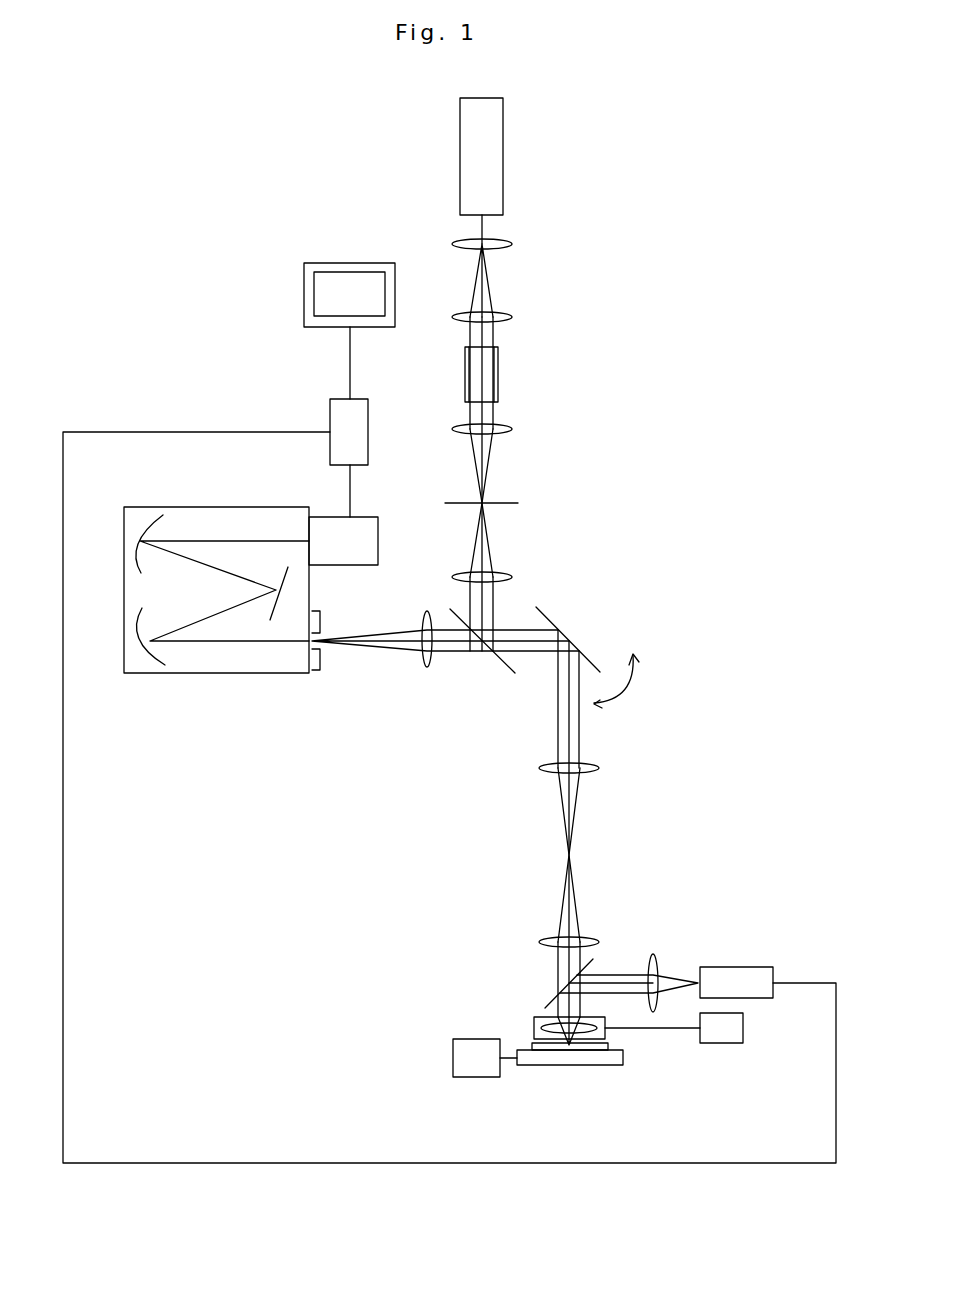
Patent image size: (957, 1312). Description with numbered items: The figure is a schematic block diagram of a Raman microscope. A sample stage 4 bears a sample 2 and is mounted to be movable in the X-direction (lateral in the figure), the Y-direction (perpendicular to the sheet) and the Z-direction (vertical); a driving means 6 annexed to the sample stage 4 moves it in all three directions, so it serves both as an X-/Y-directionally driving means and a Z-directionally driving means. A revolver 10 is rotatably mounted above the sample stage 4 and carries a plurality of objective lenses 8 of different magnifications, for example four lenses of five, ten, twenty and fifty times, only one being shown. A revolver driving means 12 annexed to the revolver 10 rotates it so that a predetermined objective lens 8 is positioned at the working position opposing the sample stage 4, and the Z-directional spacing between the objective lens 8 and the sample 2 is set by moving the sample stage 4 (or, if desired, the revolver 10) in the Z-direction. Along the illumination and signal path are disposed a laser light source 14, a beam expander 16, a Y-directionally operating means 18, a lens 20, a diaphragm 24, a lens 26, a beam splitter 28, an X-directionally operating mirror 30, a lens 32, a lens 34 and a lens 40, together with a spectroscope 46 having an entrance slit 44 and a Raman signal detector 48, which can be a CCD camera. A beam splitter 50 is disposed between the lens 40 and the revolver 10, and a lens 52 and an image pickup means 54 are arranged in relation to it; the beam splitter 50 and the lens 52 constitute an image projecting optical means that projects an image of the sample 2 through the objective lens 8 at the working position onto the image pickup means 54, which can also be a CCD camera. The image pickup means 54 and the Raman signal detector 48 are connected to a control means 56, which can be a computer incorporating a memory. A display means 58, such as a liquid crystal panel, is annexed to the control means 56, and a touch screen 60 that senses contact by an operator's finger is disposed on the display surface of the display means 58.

The sample 2 is at (530, 1046).
The sample stage 4 is at (623, 1058).
The driving means 6 is at (453, 1056).
The objective lens 8 is at (556, 1043).
The revolver 10 is at (537, 1016).
The revolver driving means 12 is at (743, 1028).
The laser light source 14 is at (503, 148).
The beam expander 16 is at (521, 236).
The Y-directionally operating means 18 is at (498, 365).
The lens 20 is at (462, 427).
The diaphragm 24 is at (450, 503).
The lens 26 is at (462, 575).
The beam splitter 28 is at (503, 678).
The X-directionally operating mirror 30 is at (548, 614).
The lens 32 is at (600, 768).
The lens 34 is at (600, 940).
The lens 40 is at (427, 668).
The entrance slit 44 is at (315, 675).
The spectroscope 46 is at (243, 675).
The Raman signal detector 48 is at (360, 565).
The beam splitter 50 is at (547, 1002).
The lens 52 is at (657, 968).
The image pickup means 54 is at (750, 967).
The control means 56 is at (330, 453).
The display means 58 is at (304, 281).
The touch screen 60 is at (385, 282).